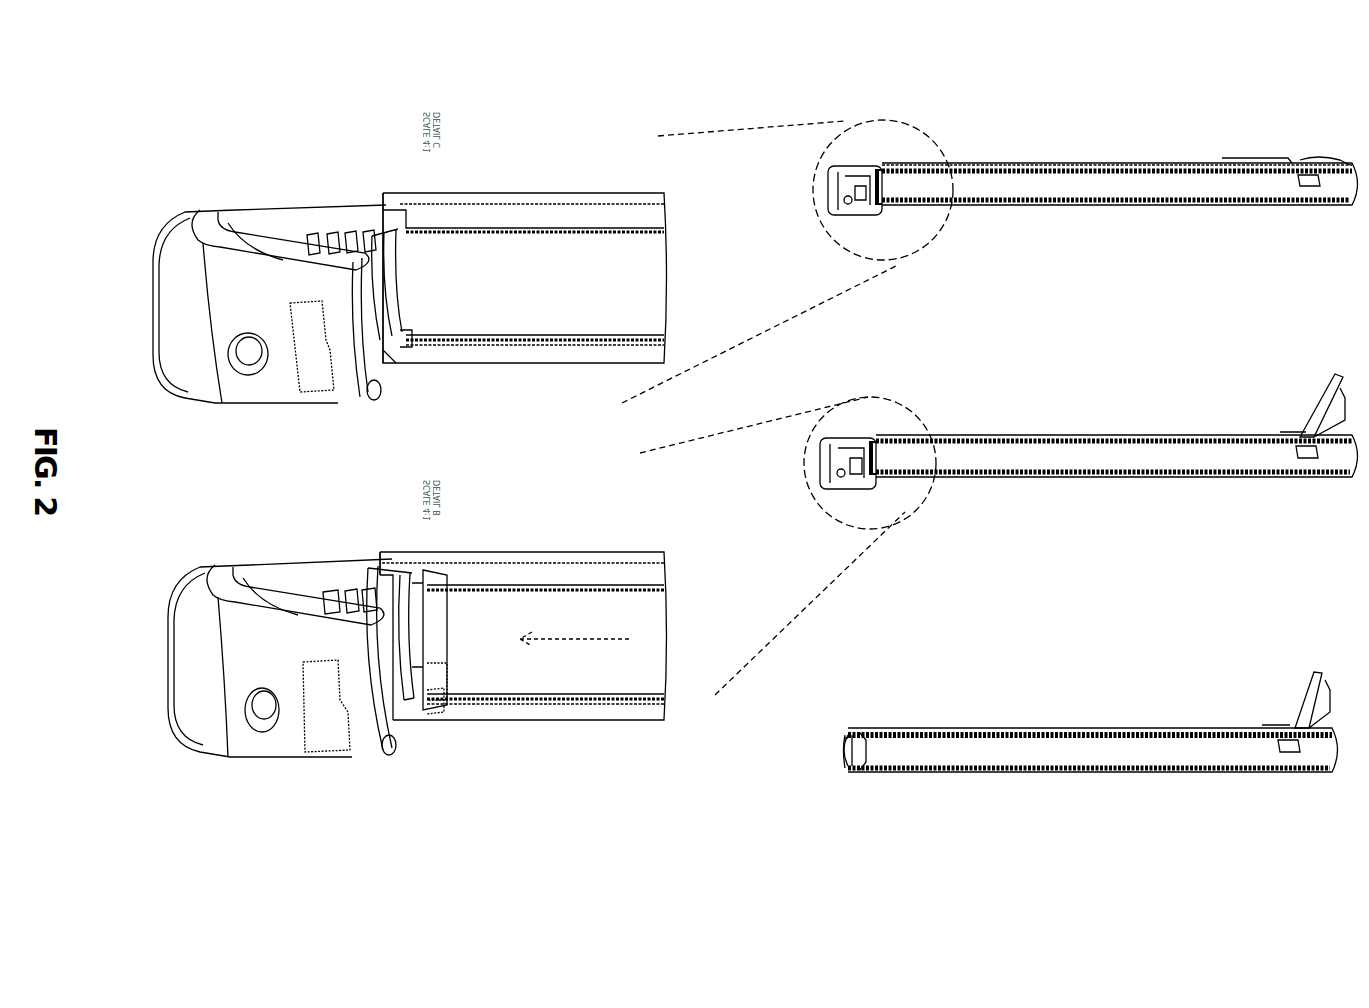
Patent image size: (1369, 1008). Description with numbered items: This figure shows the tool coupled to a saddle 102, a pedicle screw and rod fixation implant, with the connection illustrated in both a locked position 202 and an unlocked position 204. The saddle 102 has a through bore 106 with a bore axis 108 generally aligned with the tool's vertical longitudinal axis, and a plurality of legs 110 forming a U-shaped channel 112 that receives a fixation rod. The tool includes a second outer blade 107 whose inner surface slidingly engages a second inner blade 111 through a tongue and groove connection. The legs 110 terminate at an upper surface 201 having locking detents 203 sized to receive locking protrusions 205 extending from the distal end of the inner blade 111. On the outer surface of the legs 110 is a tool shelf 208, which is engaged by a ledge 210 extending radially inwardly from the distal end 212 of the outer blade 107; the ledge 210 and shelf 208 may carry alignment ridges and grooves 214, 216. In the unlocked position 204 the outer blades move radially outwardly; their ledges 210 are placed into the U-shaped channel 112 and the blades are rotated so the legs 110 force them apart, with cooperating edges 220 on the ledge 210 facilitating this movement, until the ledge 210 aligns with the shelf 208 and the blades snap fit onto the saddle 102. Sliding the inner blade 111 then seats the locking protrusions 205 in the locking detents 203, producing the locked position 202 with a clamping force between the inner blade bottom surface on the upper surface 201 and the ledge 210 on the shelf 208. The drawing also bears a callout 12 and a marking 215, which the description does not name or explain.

The light delivery assembly 12 is at (288, 170).
The saddle 102 is at (185, 398).
The through bore 106 is at (452, 618).
The second outer blade 107 is at (518, 192).
The bore axis 108 is at (1065, 204).
The legs 110 is at (380, 752).
The second inner blade 111 is at (572, 340).
The U-shaped channel 112 is at (487, 258).
The upper surface 201 is at (532, 363).
The locked position 202 is at (265, 392).
The locking detent 203 is at (893, 472).
The unlocked position 204 is at (495, 790).
The locking protrusion 205 is at (432, 708).
The tool shelf 208 is at (313, 392).
The ledge 210 is at (852, 752).
The distal end of outer blades 212 is at (856, 712).
The alignment ridges 214 is at (858, 762).
The rail 215 is at (384, 207).
The alignment grooves 216 is at (368, 386).
The cooperating edges 220 is at (846, 736).